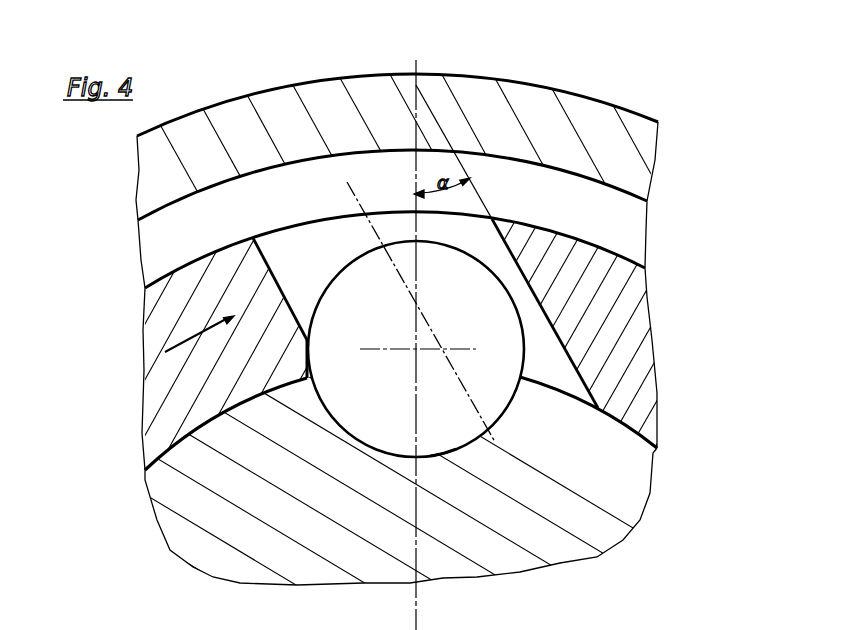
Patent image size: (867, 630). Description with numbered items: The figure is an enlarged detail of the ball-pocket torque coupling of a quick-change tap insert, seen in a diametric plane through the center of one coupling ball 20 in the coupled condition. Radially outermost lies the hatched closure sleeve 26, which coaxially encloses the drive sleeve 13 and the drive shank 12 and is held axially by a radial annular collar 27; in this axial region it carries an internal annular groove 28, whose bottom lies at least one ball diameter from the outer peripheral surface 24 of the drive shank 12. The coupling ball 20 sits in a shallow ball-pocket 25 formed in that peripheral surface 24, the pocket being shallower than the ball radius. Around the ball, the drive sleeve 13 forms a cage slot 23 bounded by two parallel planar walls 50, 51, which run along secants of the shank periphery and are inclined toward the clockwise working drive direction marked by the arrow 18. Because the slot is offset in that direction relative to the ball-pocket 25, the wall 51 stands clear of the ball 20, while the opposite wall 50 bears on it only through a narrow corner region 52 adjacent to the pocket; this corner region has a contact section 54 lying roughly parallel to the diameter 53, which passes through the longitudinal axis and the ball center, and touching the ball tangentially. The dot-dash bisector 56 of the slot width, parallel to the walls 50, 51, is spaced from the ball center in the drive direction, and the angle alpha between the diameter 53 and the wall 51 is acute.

The closure sleeve 26 is at (633, 130).
The annular groove 28 is at (618, 215).
The cage slot 23 is at (292, 228).
The drive sleeve 13 is at (597, 310).
The arrow indicating working drive direction 18 is at (192, 334).
The outer peripheral surface 24 is at (231, 408).
The drive shank 12 is at (450, 629).
The wall of cage slot 50 is at (292, 280).
The wall of cage slot 51 is at (503, 239).
The contact section 54 is at (312, 348).
The corner region 52 is at (314, 367).
The coupling ball 20 is at (466, 296).
The ball-pocket 25 is at (443, 453).
The bisector 56 is at (356, 198).
The diameter 53 is at (415, 608).
The radial annular collar 27 is at (600, 628).